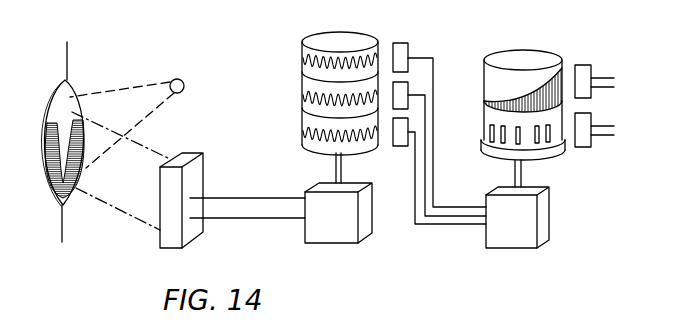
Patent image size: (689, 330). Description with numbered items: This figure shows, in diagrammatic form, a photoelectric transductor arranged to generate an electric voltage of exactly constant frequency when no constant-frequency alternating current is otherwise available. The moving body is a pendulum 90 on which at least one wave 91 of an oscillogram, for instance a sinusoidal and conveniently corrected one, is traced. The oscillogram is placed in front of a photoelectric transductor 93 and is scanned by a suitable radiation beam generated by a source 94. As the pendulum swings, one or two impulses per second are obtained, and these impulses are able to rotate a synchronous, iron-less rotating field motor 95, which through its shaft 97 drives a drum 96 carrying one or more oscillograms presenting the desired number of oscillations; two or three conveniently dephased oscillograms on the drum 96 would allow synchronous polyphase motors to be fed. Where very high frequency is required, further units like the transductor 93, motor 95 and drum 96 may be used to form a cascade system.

The pendulum 90 is at (55, 102).
The wave of an oscillogram 91 is at (50, 170).
The photoelectric transductor 93 is at (172, 240).
The source 94 is at (178, 79).
The synchronous rotating field motor 95 is at (332, 235).
The drum 96 is at (342, 37).
The shaft 97 is at (342, 171).